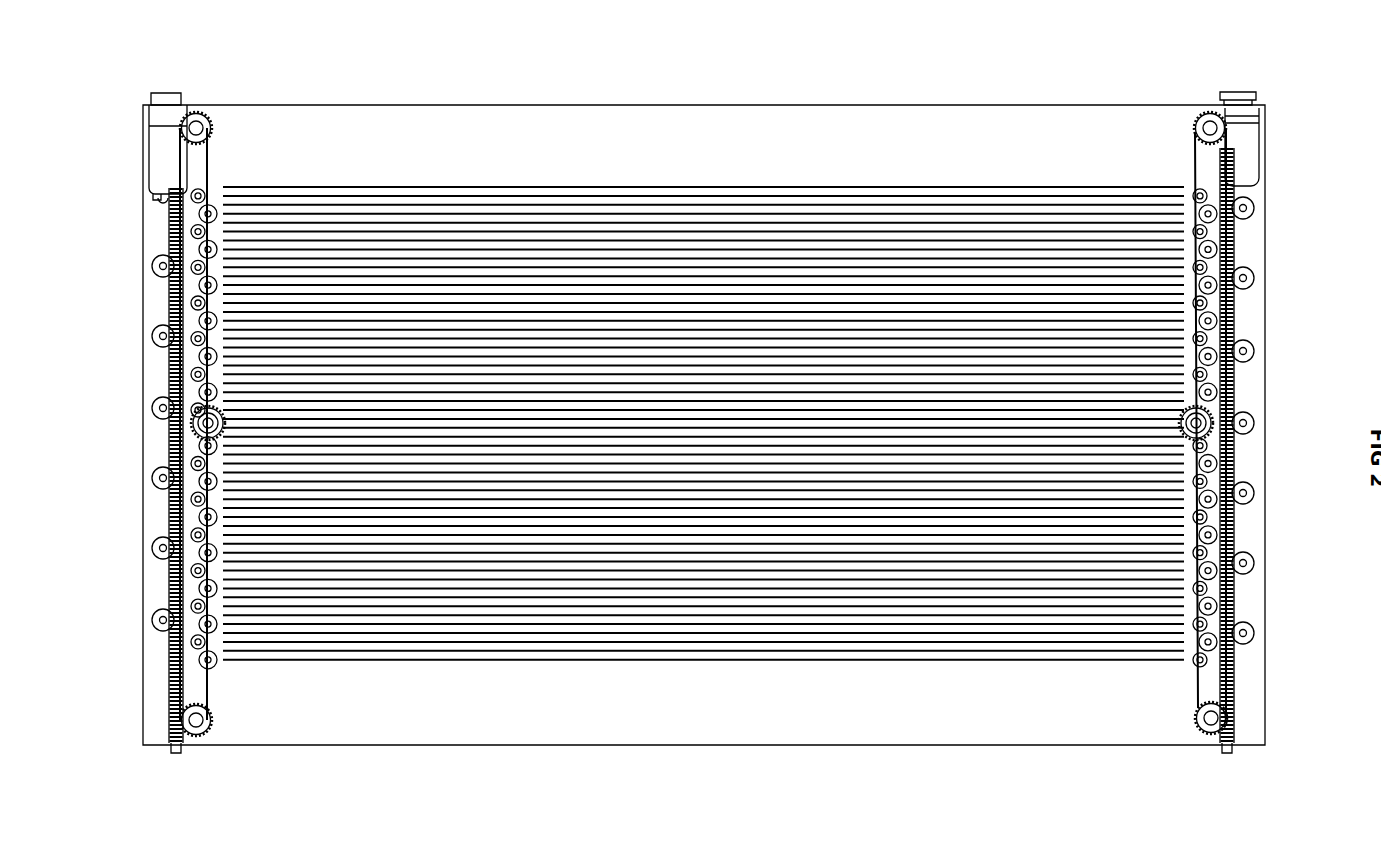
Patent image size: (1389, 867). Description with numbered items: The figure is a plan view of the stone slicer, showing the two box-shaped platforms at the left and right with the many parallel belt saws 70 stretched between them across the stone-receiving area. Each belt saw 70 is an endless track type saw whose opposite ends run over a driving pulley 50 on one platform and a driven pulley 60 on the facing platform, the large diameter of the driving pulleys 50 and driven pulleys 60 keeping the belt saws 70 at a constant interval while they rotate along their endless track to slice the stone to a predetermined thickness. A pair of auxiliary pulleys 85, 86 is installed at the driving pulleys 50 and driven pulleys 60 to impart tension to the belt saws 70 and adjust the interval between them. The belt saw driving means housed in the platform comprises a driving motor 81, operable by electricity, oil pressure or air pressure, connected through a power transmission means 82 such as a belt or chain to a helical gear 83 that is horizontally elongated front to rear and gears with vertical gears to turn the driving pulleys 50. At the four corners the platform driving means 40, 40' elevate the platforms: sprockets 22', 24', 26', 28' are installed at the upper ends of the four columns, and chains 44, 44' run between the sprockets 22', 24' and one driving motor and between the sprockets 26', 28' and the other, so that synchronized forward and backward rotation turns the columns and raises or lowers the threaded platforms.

The sprocket 22' is at (1208, 89).
The sprocket 24' is at (1200, 757).
The sprocket 26' is at (197, 87).
The sprocket 28' is at (193, 758).
The platform driving means 40 is at (1256, 433).
The platform driving means 40' is at (153, 446).
The chain 44 is at (1169, 383).
The chain 44' is at (230, 377).
The driving pulley 50 is at (1285, 608).
The driven pulley 60 is at (1226, 665).
The belt saw 70 is at (1020, 652).
The driving motor 81 is at (1245, 155).
The power transmission means 82 is at (1250, 88).
The helical gear 83 is at (1240, 330).
The auxiliary pulley 85 is at (1120, 768).
The auxiliary pulley 86 is at (1075, 768).